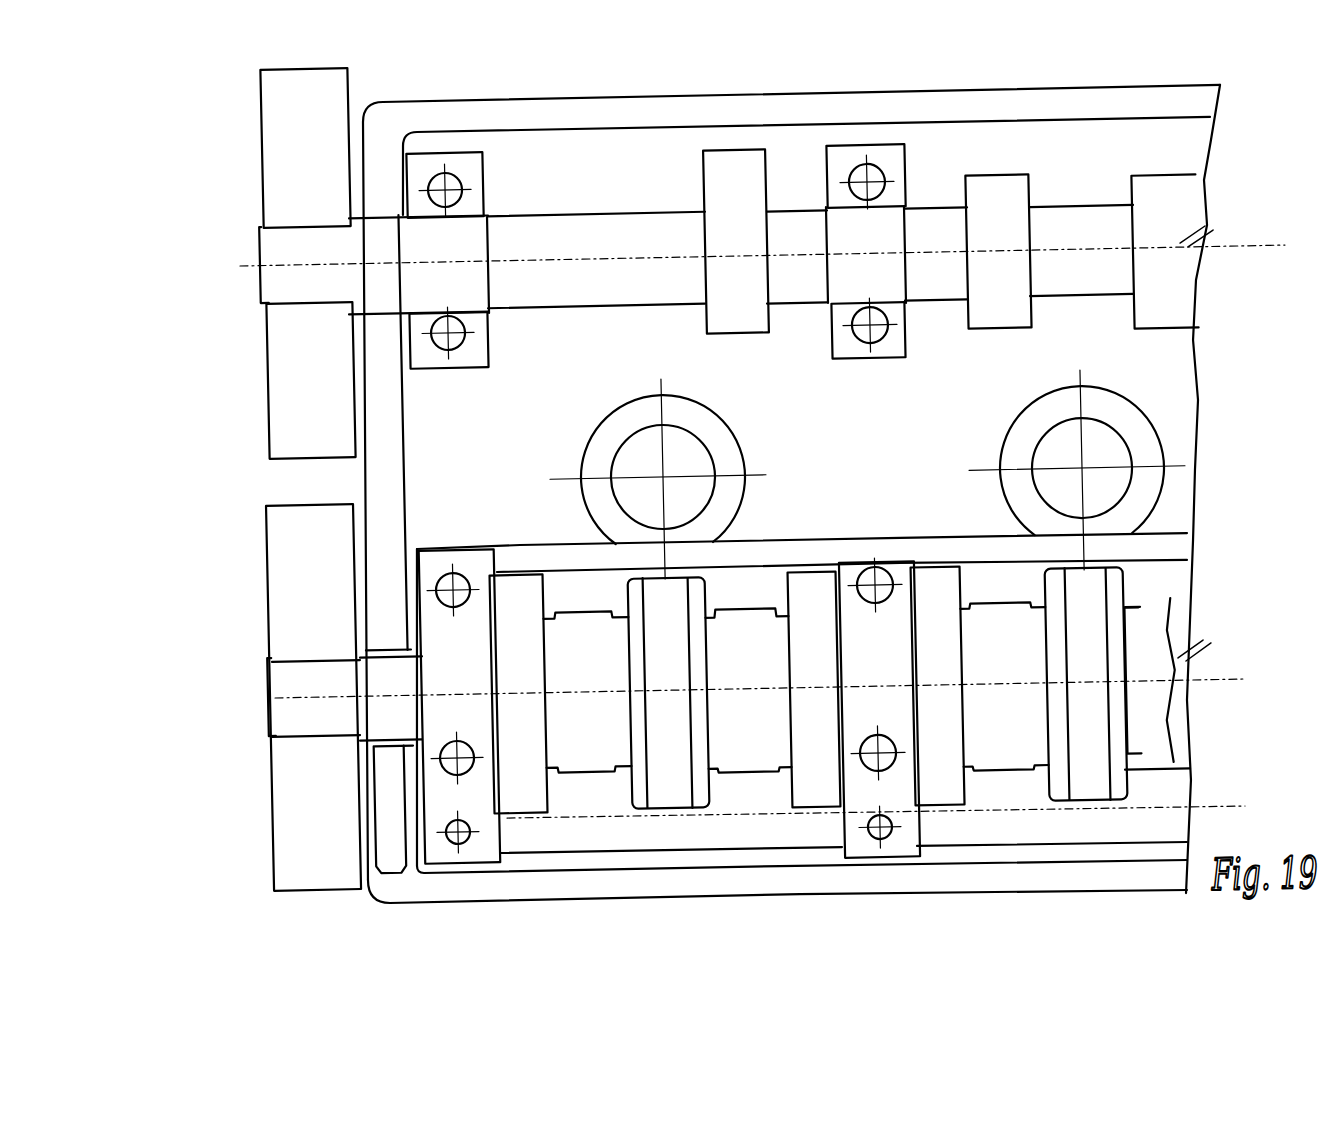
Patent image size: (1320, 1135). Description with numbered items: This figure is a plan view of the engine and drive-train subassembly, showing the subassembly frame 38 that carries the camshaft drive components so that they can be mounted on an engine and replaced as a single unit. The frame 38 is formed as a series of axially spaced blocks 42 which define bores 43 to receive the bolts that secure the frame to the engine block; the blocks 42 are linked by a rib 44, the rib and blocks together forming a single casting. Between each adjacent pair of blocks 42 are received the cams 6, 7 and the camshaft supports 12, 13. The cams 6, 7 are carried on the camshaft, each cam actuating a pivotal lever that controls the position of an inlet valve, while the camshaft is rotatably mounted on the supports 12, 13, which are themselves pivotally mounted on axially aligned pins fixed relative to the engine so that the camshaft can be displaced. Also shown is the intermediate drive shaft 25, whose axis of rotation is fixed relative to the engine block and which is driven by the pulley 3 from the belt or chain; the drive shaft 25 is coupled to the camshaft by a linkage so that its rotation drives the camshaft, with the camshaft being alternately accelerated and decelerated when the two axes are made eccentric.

The pulley 3 is at (304, 539).
The cam 6 is at (1002, 626).
The cam 7 is at (747, 632).
The camshaft support 12 is at (518, 583).
The camshaft support 13 is at (810, 602).
The intermediate drive shaft 25 is at (382, 664).
The subassembly frame 38 is at (577, 543).
The blocks 42 is at (857, 630).
The bores 43 is at (460, 576).
The rib 44 is at (542, 553).